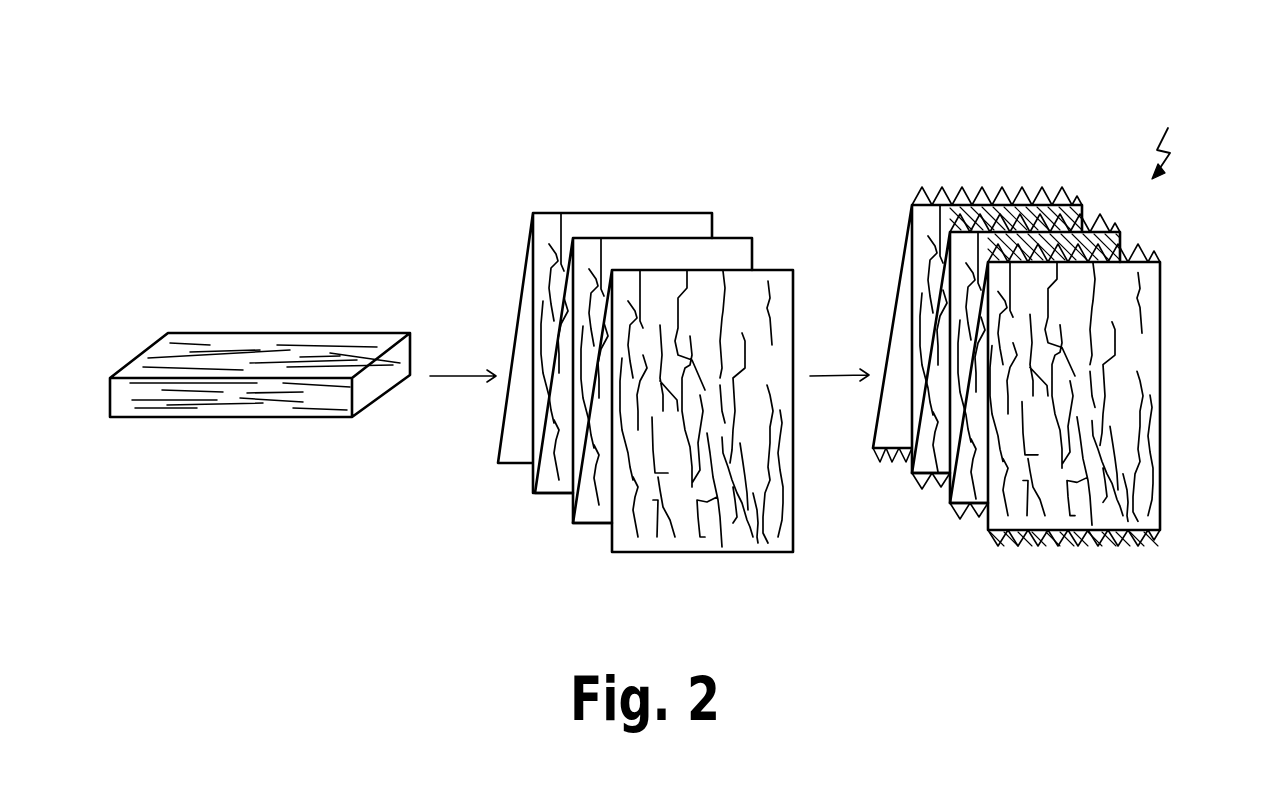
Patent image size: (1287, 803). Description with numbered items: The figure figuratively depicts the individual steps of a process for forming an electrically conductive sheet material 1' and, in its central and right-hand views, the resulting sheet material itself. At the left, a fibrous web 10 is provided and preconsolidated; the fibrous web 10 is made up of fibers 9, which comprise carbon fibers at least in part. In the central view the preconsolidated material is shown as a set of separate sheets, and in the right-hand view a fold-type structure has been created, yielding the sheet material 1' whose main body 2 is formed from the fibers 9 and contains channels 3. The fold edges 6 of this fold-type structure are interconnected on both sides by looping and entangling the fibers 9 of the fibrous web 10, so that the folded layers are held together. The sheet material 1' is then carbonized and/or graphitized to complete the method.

The fibrous web 10 is at (330, 417).
The fibers 9 is at (292, 350).
The channels 3 is at (988, 462).
The main body 2 is at (1160, 318).
The fold edges 6 is at (957, 215).
The electrically conductive sheet material 1' is at (1177, 132).